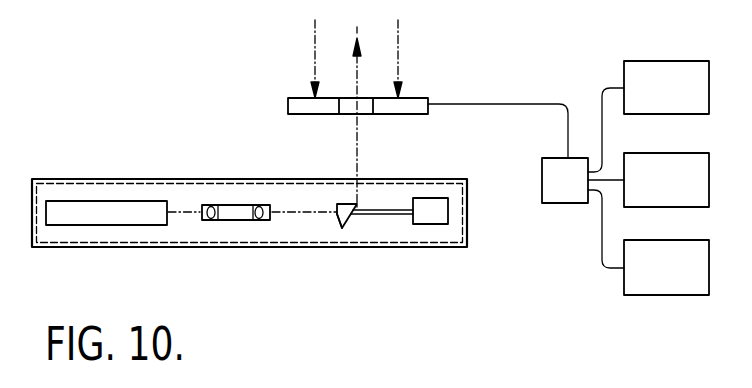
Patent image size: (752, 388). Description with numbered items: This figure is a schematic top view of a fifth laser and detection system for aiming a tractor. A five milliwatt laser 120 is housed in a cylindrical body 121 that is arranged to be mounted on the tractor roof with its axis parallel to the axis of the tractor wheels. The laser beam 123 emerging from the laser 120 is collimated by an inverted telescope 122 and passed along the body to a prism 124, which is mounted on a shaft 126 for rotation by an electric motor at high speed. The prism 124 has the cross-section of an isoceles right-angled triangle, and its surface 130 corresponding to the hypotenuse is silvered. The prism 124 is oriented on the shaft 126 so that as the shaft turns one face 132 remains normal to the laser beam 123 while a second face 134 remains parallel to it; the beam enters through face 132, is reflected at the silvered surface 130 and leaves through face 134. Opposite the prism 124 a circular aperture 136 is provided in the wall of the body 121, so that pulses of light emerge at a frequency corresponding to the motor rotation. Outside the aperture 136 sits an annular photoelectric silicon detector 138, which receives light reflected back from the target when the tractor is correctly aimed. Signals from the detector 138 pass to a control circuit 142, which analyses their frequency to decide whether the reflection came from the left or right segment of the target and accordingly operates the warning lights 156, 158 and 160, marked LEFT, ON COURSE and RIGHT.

The laser 120 is at (133, 217).
The cylindrical body 121 is at (95, 179).
The inverted telescope 122 is at (233, 220).
The laser beam 123 is at (298, 212).
The prism 124 is at (347, 213).
The shaft 126 is at (394, 216).
The silvered surface 130 is at (344, 224).
The first face of prism 132 is at (338, 226).
The second face of prism 134 is at (345, 203).
The circular aperture 136 is at (393, 87).
The annular photoelectric silicon detector 138 is at (415, 97).
The control circuit 142 is at (575, 205).
The warning light 156 is at (681, 68).
The warning light 158 is at (701, 150).
The warning light 160 is at (659, 287).